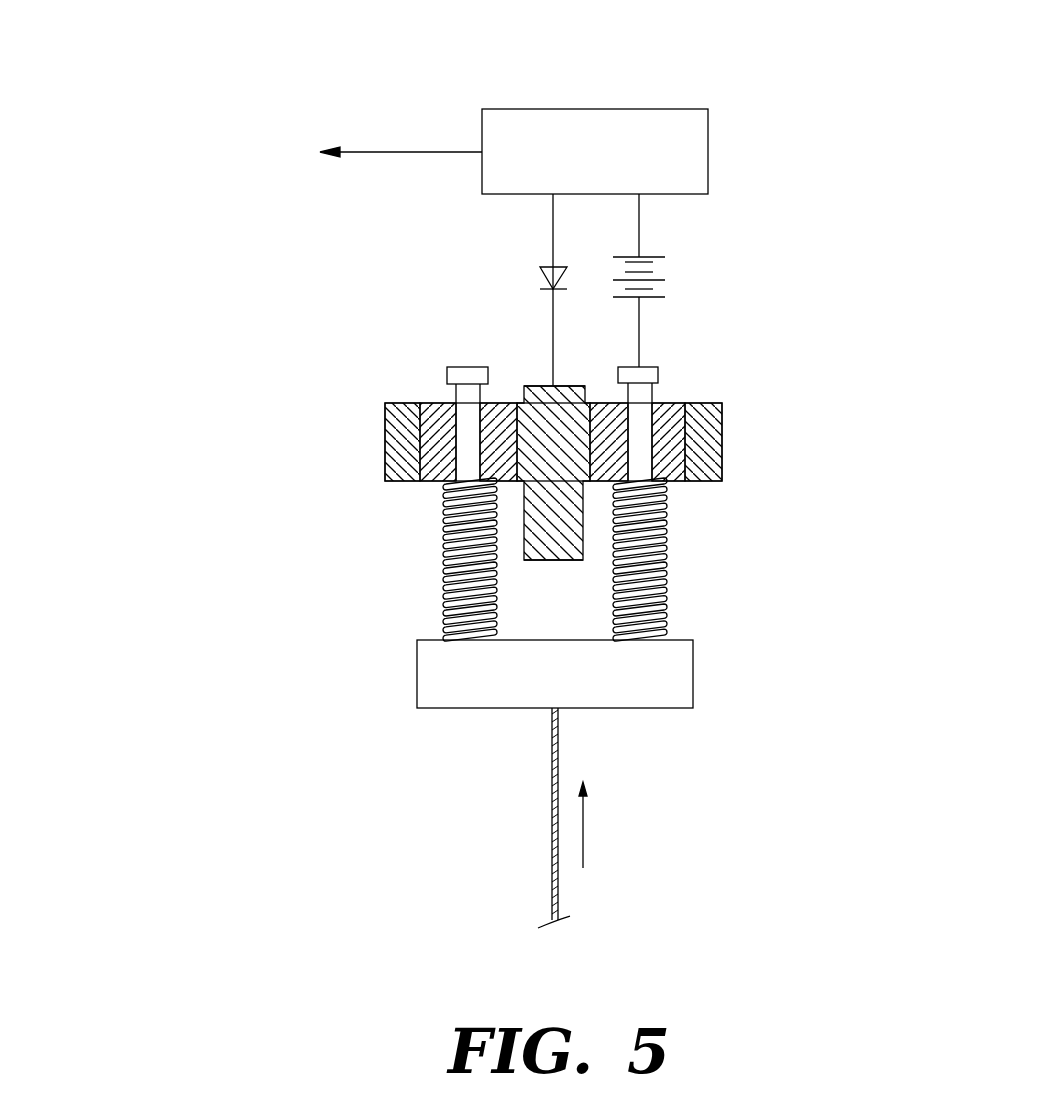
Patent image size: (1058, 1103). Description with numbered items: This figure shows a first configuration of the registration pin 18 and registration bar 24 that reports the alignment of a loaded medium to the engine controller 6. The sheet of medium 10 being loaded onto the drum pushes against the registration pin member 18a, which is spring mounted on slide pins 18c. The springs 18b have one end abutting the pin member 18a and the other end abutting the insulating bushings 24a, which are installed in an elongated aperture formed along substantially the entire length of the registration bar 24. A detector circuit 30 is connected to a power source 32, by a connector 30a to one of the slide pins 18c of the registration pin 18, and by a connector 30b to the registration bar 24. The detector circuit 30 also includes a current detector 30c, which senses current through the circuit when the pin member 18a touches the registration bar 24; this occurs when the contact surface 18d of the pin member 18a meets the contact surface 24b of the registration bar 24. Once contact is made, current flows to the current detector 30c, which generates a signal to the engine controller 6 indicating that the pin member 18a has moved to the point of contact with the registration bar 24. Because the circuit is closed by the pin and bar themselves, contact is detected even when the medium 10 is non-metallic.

The engine controller 6 is at (263, 152).
The sheet of medium 10 is at (555, 805).
The registration pin 18 is at (678, 677).
The registration pin member 18a is at (450, 648).
The springs 18b is at (445, 538).
The slide pins 18c is at (457, 393).
The contact surface 18d is at (552, 640).
The registration bar 24 is at (548, 527).
The insulating bushings 24a is at (430, 450).
The contact surface 24b is at (555, 560).
The detector circuit 30 is at (639, 214).
The connector 30a is at (645, 372).
The connector 30b is at (532, 390).
The current detector 30c is at (676, 128).
The power source 32 is at (655, 272).